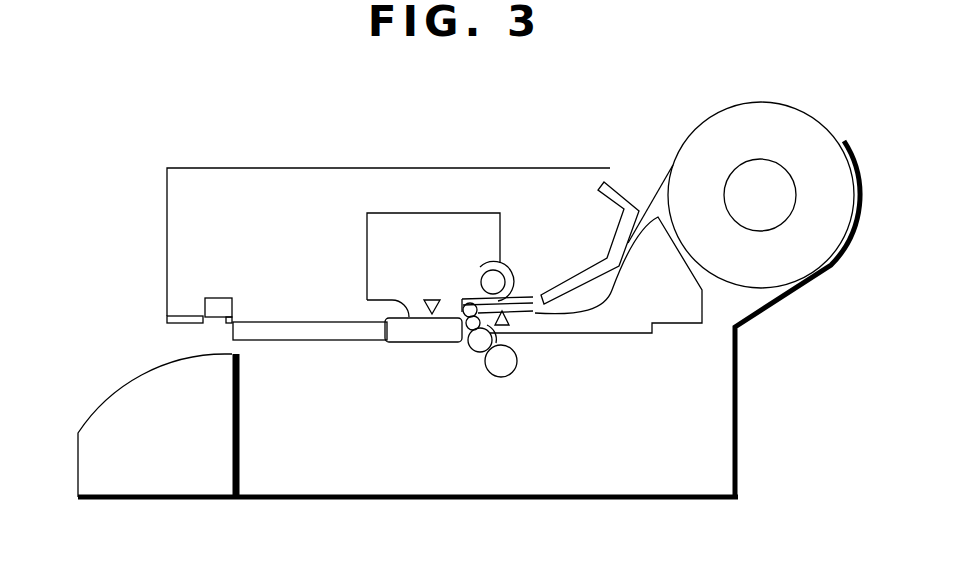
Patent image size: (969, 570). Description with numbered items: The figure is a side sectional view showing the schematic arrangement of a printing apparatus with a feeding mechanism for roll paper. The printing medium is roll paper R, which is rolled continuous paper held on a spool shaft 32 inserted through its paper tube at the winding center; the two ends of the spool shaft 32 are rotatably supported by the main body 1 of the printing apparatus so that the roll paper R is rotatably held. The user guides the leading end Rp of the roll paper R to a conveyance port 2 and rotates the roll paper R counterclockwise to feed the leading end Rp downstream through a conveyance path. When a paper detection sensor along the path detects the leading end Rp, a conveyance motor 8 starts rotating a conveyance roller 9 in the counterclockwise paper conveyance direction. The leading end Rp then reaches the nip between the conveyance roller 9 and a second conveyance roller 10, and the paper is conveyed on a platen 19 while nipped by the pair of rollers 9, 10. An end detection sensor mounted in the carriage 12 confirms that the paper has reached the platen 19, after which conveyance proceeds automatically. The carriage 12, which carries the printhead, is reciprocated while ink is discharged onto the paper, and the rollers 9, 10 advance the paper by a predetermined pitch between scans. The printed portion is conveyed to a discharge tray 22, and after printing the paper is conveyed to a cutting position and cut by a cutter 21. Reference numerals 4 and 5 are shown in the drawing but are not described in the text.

The main body 1 is at (148, 88).
The conveyance port 2 is at (637, 183).
The housing 4 is at (222, 168).
The gear train 5 is at (482, 355).
The conveyance motor 8 is at (500, 377).
The conveyance roller 9 is at (467, 345).
The conveyance roller 10 is at (467, 300).
The carriage 12 is at (430, 236).
The platen 19 is at (417, 330).
The cutter 21 is at (203, 307).
The discharge tray 22 is at (147, 383).
The spool shaft 32 is at (745, 180).
The roll paper R is at (768, 125).
The leading end of the roll paper Rp is at (625, 234).